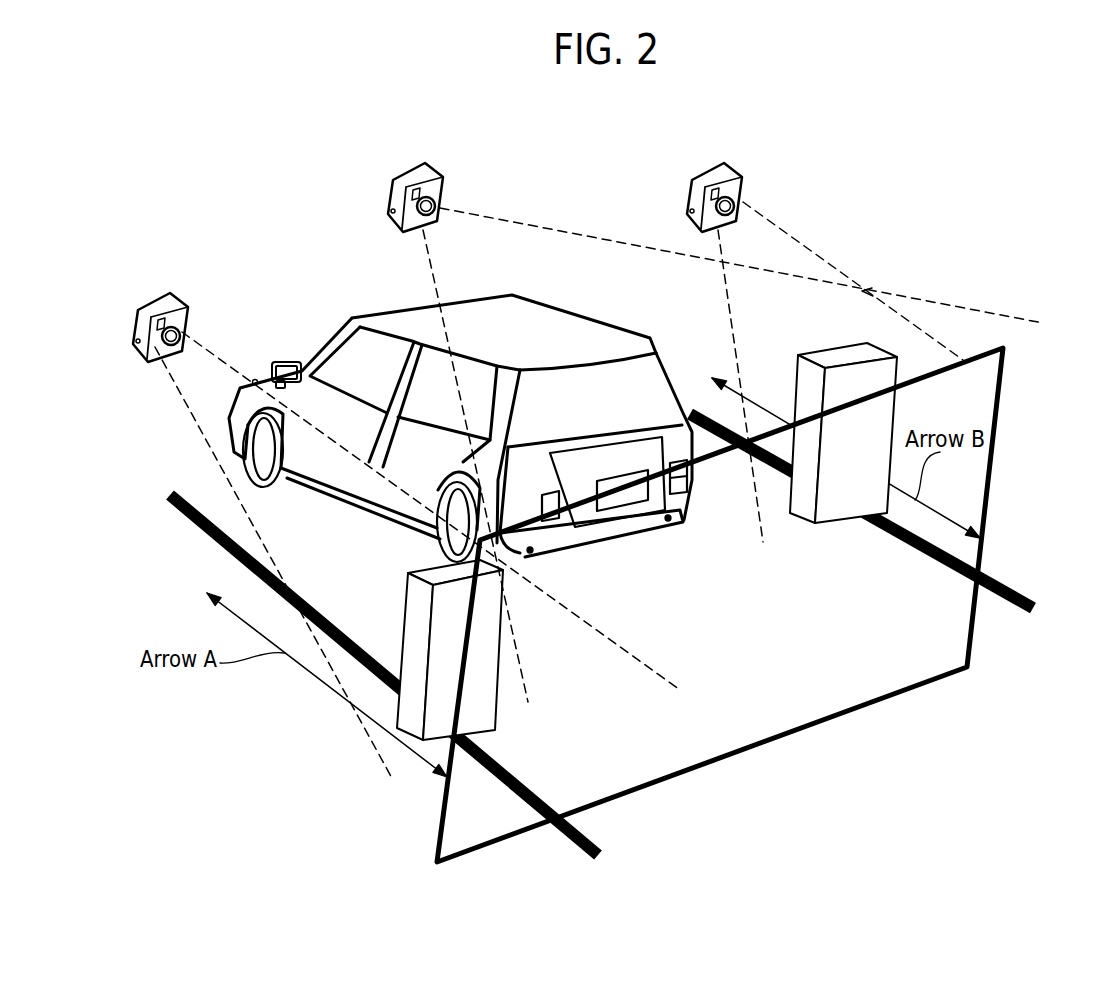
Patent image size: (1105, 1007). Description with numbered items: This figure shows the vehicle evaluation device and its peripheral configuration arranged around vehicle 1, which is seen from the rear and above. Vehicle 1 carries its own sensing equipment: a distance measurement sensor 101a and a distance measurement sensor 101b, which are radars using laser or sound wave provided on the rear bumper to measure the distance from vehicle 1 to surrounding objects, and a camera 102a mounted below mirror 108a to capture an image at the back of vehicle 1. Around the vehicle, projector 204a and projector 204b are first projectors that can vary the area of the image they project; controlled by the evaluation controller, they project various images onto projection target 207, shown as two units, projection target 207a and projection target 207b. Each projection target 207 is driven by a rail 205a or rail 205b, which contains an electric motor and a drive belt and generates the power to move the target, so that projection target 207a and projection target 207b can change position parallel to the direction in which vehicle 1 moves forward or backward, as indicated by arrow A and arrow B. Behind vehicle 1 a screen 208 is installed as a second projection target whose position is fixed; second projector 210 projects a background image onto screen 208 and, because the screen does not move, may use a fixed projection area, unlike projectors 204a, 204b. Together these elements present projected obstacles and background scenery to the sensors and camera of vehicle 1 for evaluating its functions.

The vehicle 1 is at (553, 323).
The distance measurement sensor 101a is at (531, 552).
The distance measurement sensor 101b is at (669, 520).
The camera 102a is at (252, 382).
The mirror 108a is at (280, 360).
The projector 204a is at (162, 305).
The projector 204b is at (703, 186).
The second projector 210 is at (392, 184).
The rail 205a is at (186, 526).
The rail 205b is at (1035, 615).
The projection target 207 is at (620, 520).
The projection target 207a is at (406, 592).
The projection target 207b is at (842, 345).
The screen 208 is at (762, 745).